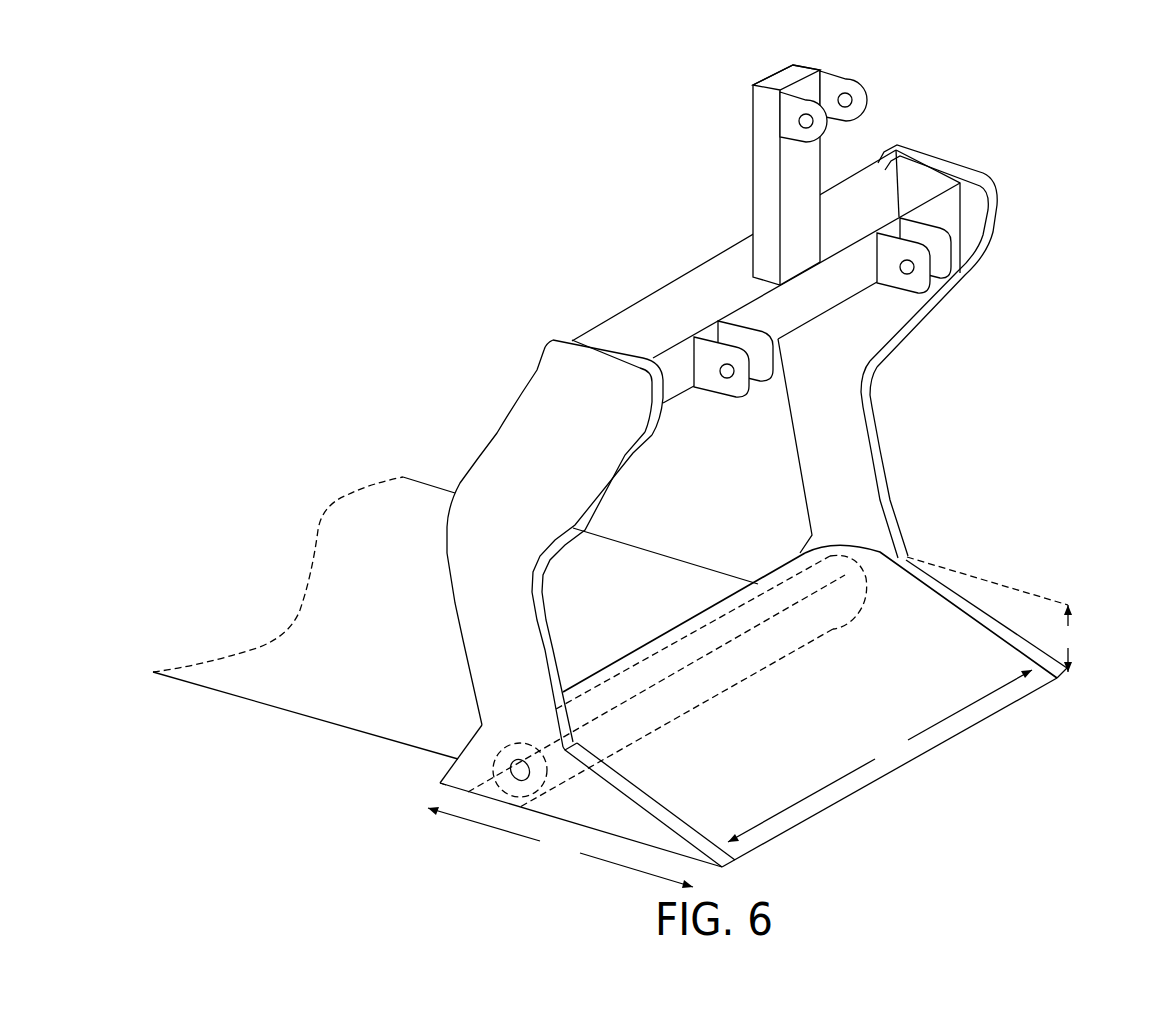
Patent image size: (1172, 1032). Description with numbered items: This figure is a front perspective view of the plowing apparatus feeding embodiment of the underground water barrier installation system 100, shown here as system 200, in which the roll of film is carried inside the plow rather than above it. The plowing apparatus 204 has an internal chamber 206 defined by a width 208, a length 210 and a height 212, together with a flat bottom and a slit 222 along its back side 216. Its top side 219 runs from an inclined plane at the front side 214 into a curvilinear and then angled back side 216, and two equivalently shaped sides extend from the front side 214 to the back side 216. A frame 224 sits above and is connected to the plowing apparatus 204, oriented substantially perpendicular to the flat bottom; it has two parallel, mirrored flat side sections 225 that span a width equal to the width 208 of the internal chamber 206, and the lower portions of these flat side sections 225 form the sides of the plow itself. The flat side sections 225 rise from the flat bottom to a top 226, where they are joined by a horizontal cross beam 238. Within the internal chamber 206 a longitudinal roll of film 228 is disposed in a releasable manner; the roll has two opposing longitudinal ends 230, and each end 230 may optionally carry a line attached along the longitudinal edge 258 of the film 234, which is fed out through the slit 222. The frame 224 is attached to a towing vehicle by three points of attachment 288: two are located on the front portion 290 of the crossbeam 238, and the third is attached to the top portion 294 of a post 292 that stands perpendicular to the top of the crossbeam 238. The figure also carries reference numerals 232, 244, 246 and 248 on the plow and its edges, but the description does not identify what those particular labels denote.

The system 100 is at (355, 62).
The system 200 is at (400, 180).
The plowing apparatus 204 is at (987, 647).
The internal chamber 206 is at (735, 728).
The width 208 is at (960, 713).
The length 210 is at (493, 830).
The height 212 is at (1072, 658).
The front side 214 is at (860, 790).
The back side 216 is at (653, 640).
The top side 219 is at (942, 684).
The slit 222 is at (443, 786).
The frame 224 is at (457, 610).
The flat side sections 225 is at (841, 412).
The top 226 is at (935, 157).
The longitudinal roll of film 228 is at (750, 634).
The opposing longitudinal ends 230 is at (540, 750).
The pivot pin 232 is at (514, 758).
The film 234 is at (391, 577).
The horizontal cross beam 238 is at (697, 324).
The side rim 244 is at (650, 818).
The side wall 246 is at (460, 747).
The upper clevis 248 is at (780, 108).
The longitudinal edge 258 is at (190, 685).
The points of attachment 288 is at (866, 82).
The front portion 290 is at (837, 300).
The post 292 is at (797, 192).
The top portion 294 is at (789, 75).